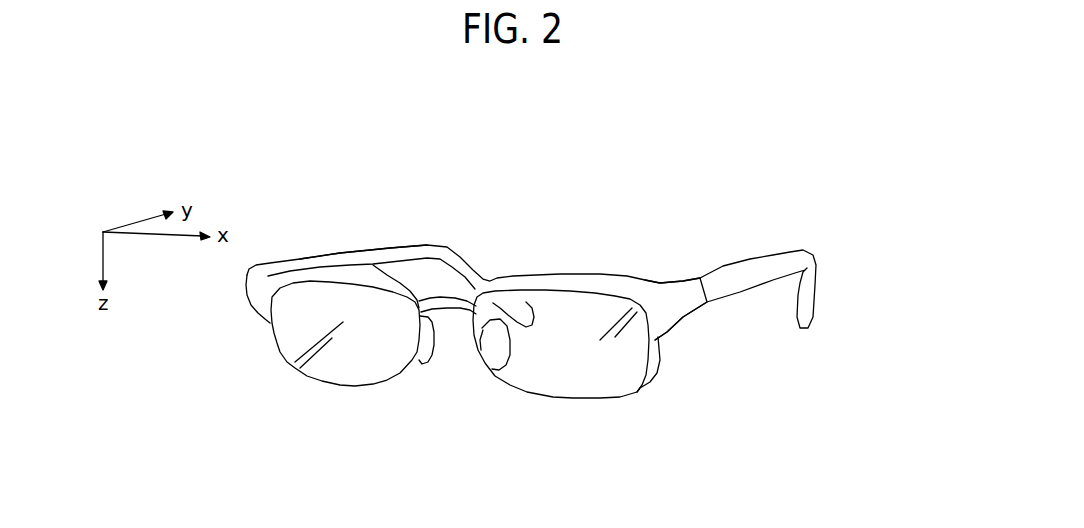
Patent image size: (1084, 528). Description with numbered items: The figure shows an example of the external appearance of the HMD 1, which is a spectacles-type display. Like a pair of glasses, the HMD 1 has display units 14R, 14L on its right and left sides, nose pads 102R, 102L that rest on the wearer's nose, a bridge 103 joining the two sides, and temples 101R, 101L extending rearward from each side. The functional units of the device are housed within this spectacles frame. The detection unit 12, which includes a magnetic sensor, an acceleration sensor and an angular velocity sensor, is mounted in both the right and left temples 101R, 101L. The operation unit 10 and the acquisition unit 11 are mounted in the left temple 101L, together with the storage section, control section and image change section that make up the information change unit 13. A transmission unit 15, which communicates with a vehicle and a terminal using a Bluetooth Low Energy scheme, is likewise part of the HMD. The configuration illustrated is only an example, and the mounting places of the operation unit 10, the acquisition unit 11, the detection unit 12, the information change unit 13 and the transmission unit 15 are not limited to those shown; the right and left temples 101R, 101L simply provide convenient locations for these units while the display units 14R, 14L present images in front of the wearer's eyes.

The HMD 1 is at (817, 179).
The operation unit 10 is at (717, 268).
The acquisition unit 11 is at (717, 268).
The detection unit 12 is at (280, 258).
The information change unit 13 is at (717, 268).
The transmission unit 15 is at (660, 292).
The right temple 101R is at (385, 248).
The left temple 101L is at (780, 258).
The right nose pad 102R is at (432, 346).
The left nose pad 102L is at (492, 348).
The bridge 103 is at (440, 297).
The right display unit 14R is at (349, 366).
The left display unit 14L is at (556, 370).